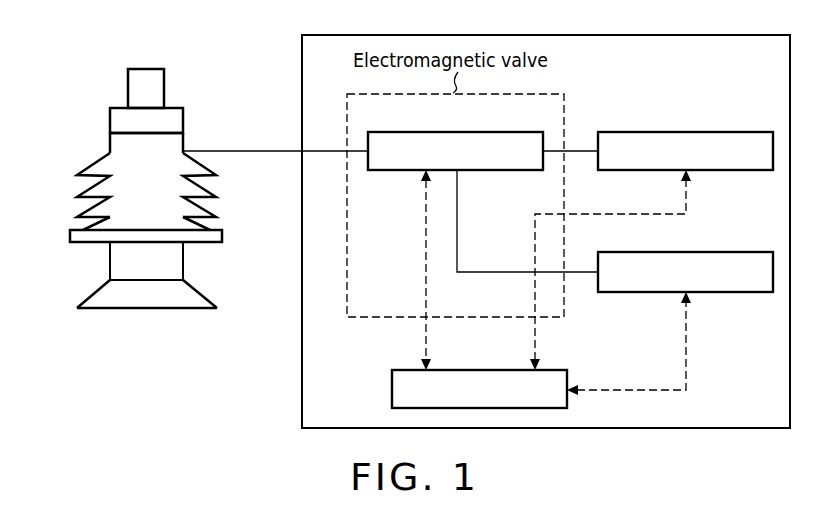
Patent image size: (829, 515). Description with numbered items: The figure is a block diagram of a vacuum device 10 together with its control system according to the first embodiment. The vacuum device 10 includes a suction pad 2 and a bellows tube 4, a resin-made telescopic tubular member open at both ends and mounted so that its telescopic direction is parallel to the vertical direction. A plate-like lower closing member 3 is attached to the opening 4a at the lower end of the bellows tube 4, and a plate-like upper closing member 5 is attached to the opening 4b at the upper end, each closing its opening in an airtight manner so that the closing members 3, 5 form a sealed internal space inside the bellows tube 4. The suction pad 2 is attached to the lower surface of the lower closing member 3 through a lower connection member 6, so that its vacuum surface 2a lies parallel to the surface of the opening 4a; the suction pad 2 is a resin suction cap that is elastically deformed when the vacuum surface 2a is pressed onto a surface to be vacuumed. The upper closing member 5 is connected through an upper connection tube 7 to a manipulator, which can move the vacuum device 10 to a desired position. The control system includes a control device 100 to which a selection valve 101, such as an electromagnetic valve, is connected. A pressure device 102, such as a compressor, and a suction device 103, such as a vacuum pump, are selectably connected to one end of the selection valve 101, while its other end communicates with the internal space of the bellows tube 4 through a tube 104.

The vacuum device 10 is at (65, 65).
The upper connection tube 7 is at (147, 72).
The upper closing member 5 is at (172, 108).
The opening at the upper end 4b is at (127, 128).
The bellows tube 4 is at (102, 167).
The opening at the lower end 4a is at (97, 233).
The lower closing member 3 is at (200, 247).
The lower connection member 6 is at (122, 268).
The suction pad 2 is at (112, 304).
The vacuum surface 2a is at (187, 310).
The tube 104 is at (322, 148).
The selection valve 101 is at (495, 172).
The pressure device 102 is at (683, 132).
The suction device 103 is at (727, 252).
The control device 100 is at (480, 370).